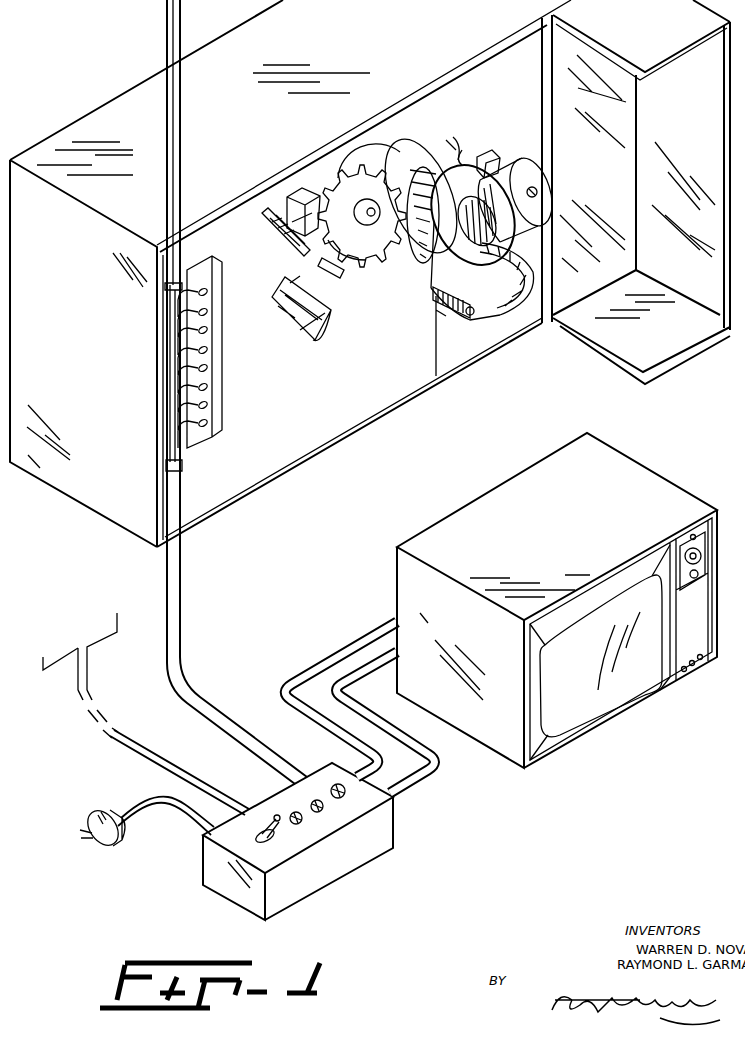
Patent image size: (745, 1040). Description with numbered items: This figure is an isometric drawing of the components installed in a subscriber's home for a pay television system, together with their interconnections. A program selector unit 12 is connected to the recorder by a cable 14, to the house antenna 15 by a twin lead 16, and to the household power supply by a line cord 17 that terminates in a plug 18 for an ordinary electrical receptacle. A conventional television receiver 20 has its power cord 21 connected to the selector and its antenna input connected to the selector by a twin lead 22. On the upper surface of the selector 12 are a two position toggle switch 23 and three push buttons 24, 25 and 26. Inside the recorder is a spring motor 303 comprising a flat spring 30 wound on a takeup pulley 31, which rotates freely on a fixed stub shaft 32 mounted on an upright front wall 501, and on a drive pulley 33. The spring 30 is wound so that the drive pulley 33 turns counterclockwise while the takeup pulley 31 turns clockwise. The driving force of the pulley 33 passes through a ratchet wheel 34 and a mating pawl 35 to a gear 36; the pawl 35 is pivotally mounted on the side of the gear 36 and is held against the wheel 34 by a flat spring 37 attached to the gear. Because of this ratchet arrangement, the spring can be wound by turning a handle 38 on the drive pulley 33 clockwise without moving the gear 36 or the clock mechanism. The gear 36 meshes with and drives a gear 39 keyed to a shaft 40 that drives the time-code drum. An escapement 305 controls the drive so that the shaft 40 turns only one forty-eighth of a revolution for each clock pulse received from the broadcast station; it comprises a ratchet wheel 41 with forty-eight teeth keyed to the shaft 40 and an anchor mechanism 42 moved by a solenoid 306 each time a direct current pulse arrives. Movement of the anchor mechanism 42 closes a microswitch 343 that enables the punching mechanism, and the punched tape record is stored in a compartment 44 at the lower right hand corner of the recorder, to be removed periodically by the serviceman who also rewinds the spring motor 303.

The program selector unit 12 is at (308, 889).
The cable 14 is at (186, 645).
The house antenna 15 is at (105, 630).
The twin lead 16 is at (147, 753).
The line cord 17 is at (148, 800).
The plug 18 is at (100, 812).
The television receiver 20 is at (588, 496).
The power cord 21 is at (406, 785).
The twin lead 22 is at (322, 658).
The toggle switch 23 is at (276, 818).
The push button 24 is at (302, 820).
The push button 25 is at (323, 808).
The push button 26 is at (344, 794).
The flat spring 30 is at (514, 165).
The takeup pulley 31 is at (530, 202).
The stub shaft 32 is at (491, 158).
The drive pulley 33 is at (432, 262).
The ratchet wheel 34 is at (418, 248).
The pawl 35 is at (398, 165).
The gear 36 is at (452, 140).
The flat spring 37 is at (428, 150).
The handle 38 is at (434, 301).
The gear 39 is at (368, 252).
The shaft 40 is at (378, 228).
The ratchet wheel 41 is at (335, 278).
The anchor mechanism 42 is at (308, 262).
The compartment 44 is at (441, 326).
The spring motor 303 is at (470, 157).
The escapement 305 is at (330, 187).
The solenoid 306 is at (300, 332).
The microswitch 343 is at (298, 188).
The upright front wall 501 is at (223, 352).